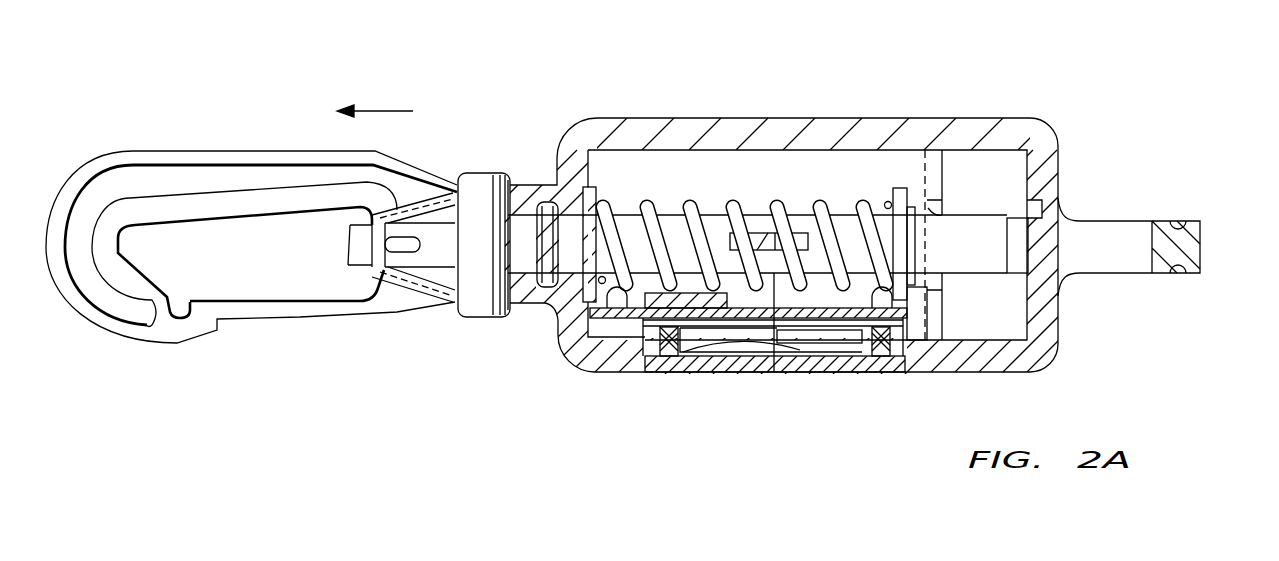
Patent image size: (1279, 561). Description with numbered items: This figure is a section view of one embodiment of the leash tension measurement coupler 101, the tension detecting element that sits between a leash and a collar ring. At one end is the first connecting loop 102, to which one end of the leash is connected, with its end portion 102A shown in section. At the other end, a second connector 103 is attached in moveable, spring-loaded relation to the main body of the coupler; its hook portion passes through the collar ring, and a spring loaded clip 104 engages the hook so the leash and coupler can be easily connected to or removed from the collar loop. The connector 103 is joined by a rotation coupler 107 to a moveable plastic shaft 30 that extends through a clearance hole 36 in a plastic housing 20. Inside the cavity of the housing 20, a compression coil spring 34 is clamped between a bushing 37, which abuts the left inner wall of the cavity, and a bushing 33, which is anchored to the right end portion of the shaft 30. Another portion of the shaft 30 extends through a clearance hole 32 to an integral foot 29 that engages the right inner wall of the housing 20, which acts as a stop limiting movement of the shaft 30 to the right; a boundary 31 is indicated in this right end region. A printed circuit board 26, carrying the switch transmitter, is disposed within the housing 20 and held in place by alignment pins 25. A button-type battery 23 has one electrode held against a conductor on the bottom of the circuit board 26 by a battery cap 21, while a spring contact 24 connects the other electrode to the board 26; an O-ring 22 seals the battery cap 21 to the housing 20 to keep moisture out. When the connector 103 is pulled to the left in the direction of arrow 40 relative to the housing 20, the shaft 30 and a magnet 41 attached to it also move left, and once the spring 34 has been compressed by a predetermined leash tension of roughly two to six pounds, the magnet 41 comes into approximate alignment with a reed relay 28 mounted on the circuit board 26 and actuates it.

The plastic housing 20 is at (771, 120).
The battery cap 21 is at (661, 370).
The O-ring 22 is at (853, 374).
The button-type battery 23 is at (820, 344).
The spring contact 24 is at (742, 344).
The alignment pins 25 is at (610, 298).
The printed circuit board 26 is at (707, 313).
The reed relay 28 is at (607, 227).
The integral foot 29 is at (1020, 292).
The moveable plastic shaft 30 is at (717, 223).
The dashed boundary 31 is at (936, 135).
The clearance hole 32 is at (948, 215).
The bushing 33 is at (905, 187).
The compression coil spring 34 is at (864, 215).
The clearance hole 36 is at (514, 212).
The bushing 37 is at (520, 215).
The arrow 40 is at (373, 111).
The magnet 41 is at (760, 233).
The leash tension measurement coupler 101 is at (412, 420).
The first connecting loop 102 is at (1200, 248).
The rod end 102A is at (1152, 243).
The second connector 103 is at (247, 170).
The spring loaded clip 104 is at (272, 312).
The rotation coupler 107 is at (482, 318).